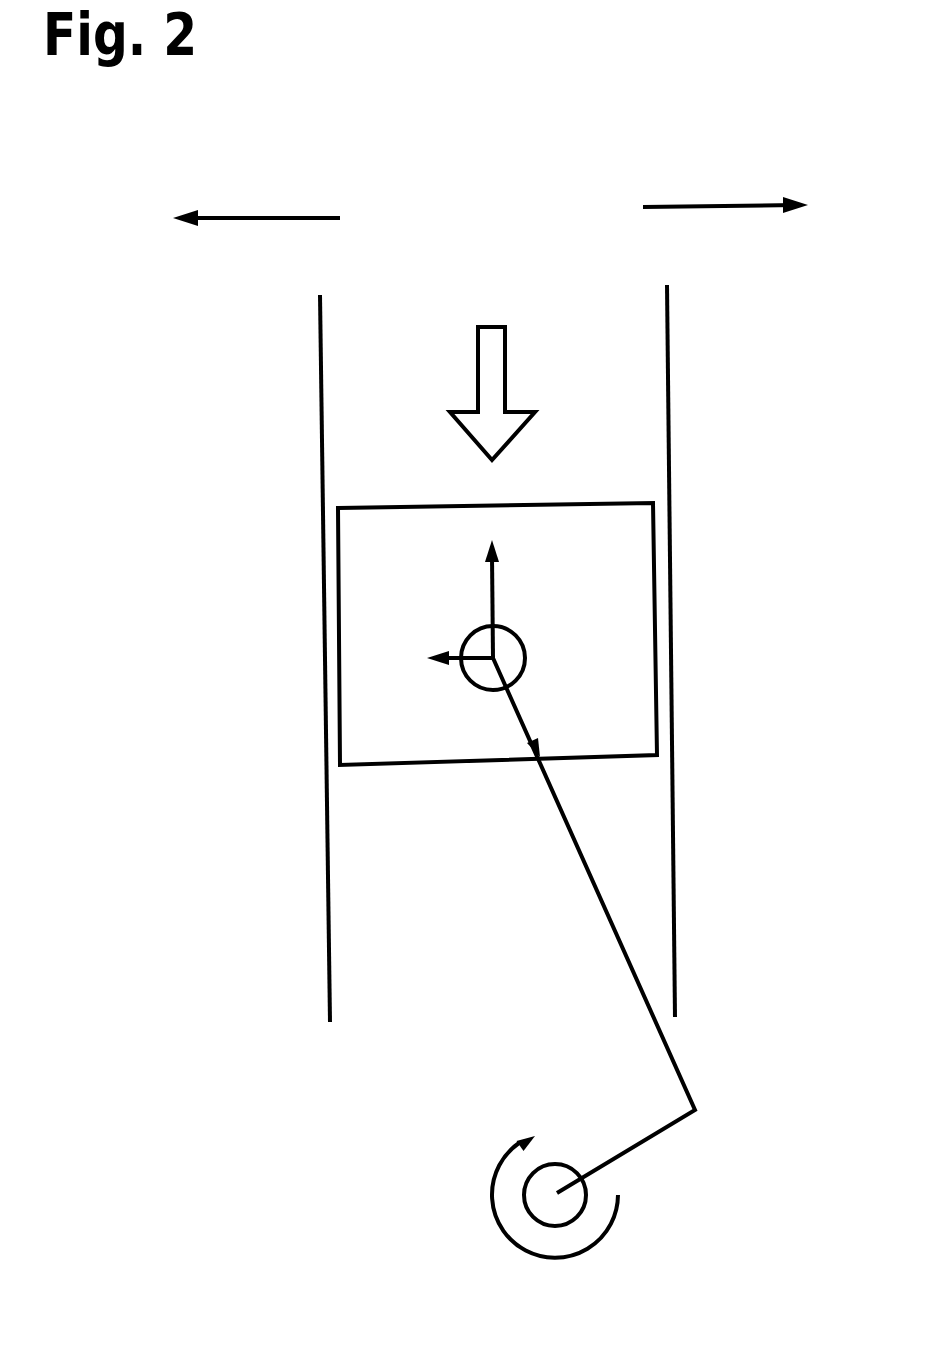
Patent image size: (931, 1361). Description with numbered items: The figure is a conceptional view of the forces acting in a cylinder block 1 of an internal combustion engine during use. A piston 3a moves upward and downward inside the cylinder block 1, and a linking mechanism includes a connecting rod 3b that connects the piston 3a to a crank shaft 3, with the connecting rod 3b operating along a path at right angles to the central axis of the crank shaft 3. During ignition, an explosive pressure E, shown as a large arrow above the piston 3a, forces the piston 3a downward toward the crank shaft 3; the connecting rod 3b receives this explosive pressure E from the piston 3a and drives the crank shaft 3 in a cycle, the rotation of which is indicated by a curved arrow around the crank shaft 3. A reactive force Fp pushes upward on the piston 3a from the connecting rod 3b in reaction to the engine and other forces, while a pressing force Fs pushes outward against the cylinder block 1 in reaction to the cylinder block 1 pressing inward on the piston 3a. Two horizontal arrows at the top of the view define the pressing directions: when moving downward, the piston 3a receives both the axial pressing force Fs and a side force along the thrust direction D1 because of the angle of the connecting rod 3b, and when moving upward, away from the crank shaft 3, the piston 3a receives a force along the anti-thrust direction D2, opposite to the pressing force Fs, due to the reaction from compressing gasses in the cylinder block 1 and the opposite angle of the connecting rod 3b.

The cylinder block 1 is at (645, 378).
The crank shaft 3 is at (577, 1195).
The piston 3a is at (627, 570).
The connecting rod 3b is at (670, 1048).
The explosive pressure E is at (505, 348).
The reactive force Fp is at (487, 590).
The pressing force Fs is at (470, 687).
The thrust direction D1 is at (256, 191).
The anti-thrust direction D2 is at (725, 179).